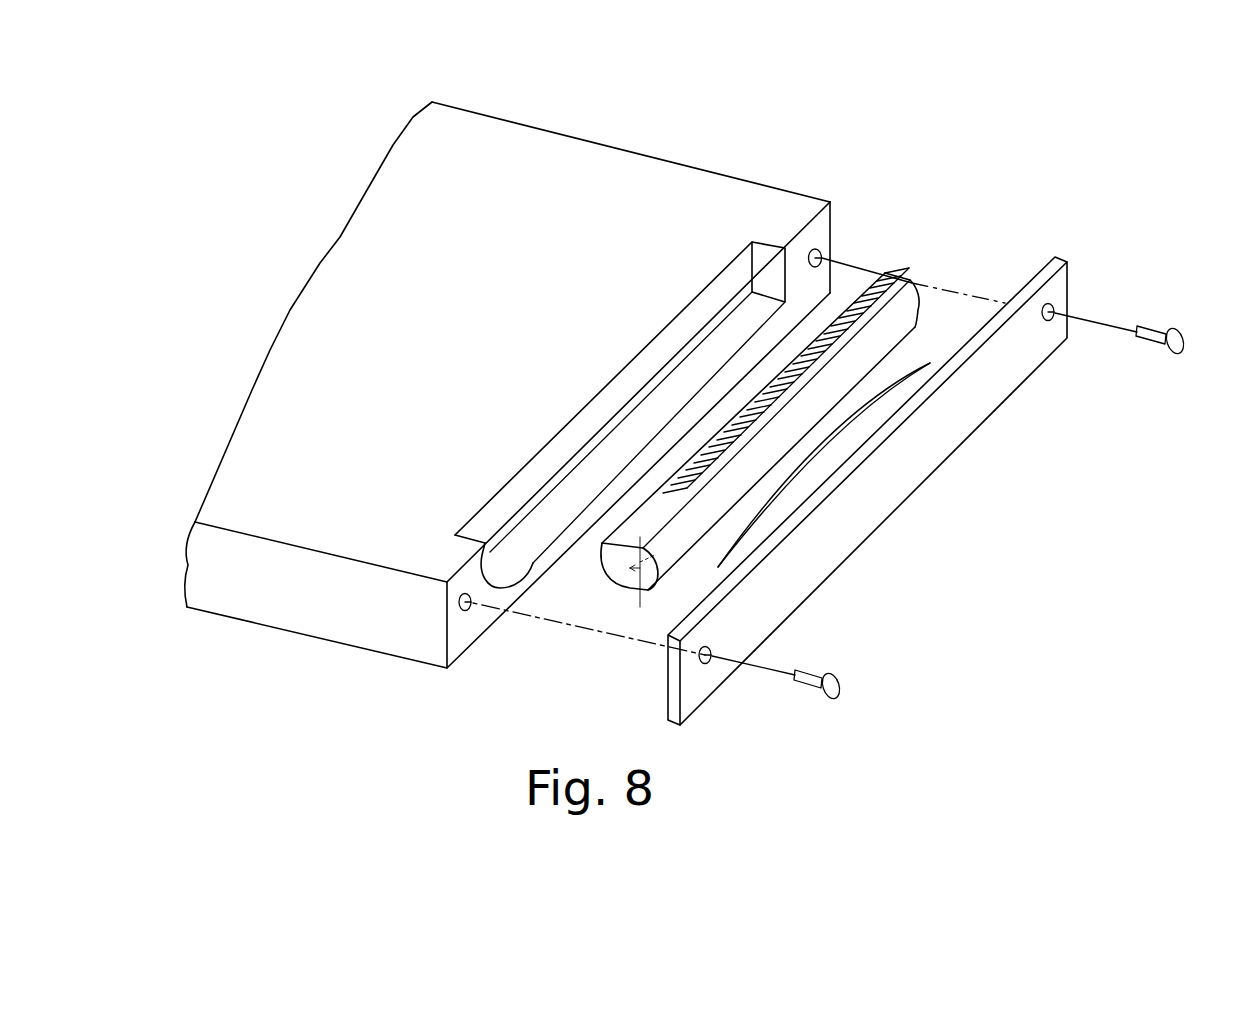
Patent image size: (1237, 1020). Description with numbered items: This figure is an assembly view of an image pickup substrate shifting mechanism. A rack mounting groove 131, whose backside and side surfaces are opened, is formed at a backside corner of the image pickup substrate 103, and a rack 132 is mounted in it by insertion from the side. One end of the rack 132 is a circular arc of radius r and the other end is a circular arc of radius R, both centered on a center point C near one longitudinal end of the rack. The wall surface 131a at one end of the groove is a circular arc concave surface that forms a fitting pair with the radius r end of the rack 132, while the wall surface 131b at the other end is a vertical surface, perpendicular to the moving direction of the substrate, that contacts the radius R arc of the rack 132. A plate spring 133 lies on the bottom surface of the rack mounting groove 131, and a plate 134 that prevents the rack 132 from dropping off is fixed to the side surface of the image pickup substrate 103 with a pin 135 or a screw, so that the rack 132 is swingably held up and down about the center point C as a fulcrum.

The image pickup substrate 103 is at (660, 163).
The rack mounting groove 131 is at (737, 340).
The wall surface 131a is at (497, 563).
The wall surface 131b is at (772, 273).
The rack 132 is at (900, 278).
The plate spring 133 is at (920, 357).
The plate 134 is at (930, 475).
The pin 135 is at (1174, 328).